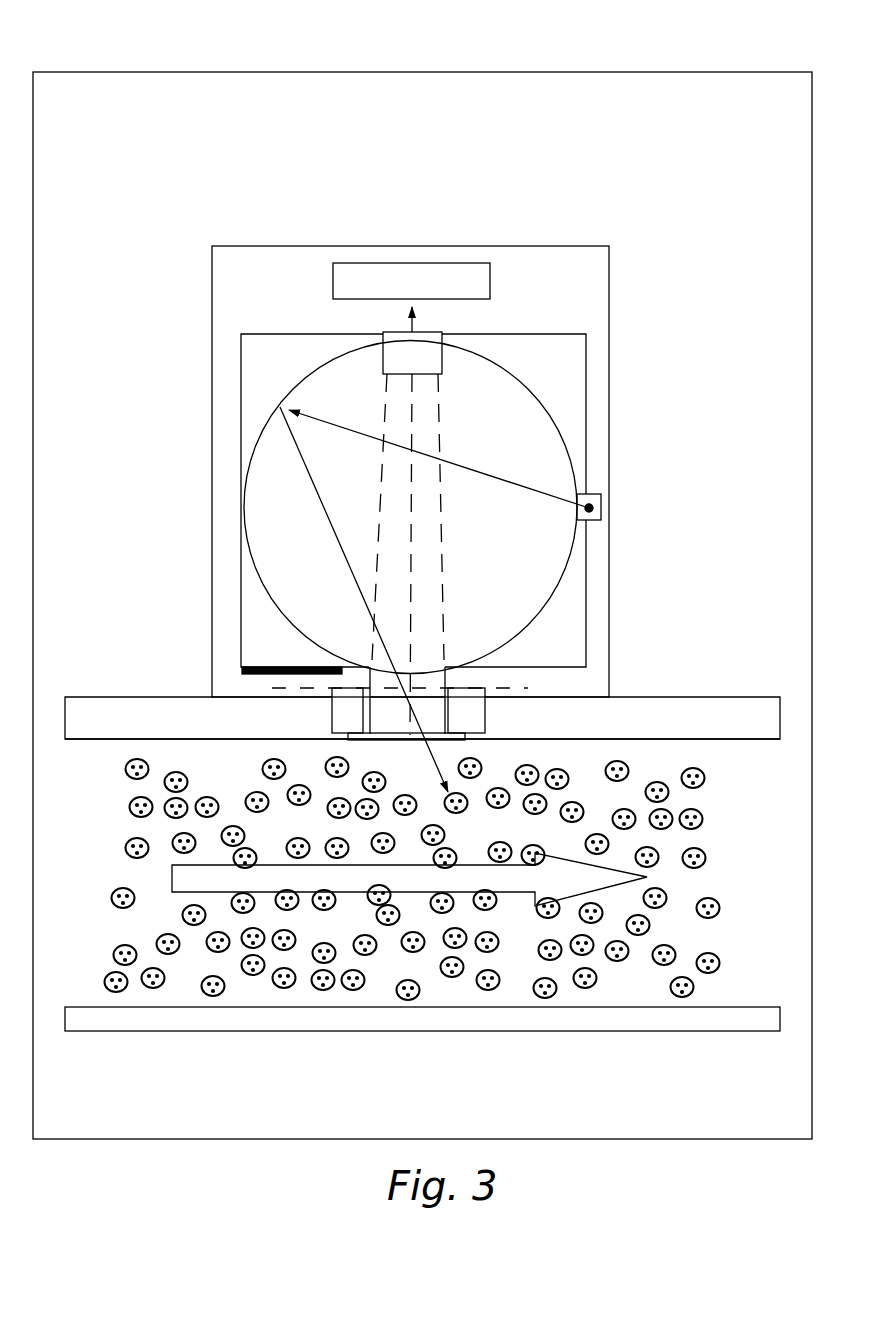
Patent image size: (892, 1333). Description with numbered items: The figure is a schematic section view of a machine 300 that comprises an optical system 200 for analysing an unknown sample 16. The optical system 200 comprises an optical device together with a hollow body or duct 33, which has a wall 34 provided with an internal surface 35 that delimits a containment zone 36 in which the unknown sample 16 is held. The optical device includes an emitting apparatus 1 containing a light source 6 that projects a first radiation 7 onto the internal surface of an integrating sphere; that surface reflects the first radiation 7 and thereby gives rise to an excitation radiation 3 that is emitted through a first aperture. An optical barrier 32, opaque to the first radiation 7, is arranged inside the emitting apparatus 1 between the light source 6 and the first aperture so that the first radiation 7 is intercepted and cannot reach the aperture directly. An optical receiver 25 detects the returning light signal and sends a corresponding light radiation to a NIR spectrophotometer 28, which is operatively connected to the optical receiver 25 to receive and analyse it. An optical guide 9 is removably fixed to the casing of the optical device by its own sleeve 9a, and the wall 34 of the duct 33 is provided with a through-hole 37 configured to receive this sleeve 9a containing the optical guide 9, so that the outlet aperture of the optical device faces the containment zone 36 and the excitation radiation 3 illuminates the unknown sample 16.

The machine 300 is at (170, 62).
The optical system 200 is at (158, 275).
The emitting apparatus 1 is at (571, 290).
The NIR spectrophotometer 28 is at (333, 278).
The optical receiver 25 is at (390, 352).
The optical barrier 32 is at (558, 577).
The light source 6 is at (589, 508).
The first radiation 7 is at (492, 476).
The excitation radiation 3 is at (317, 490).
The optical guide 9 is at (452, 717).
The sleeve 9a is at (347, 705).
The through-hole 37 is at (478, 715).
The wall 34 is at (95, 712).
The internal surface 35 is at (297, 740).
The hollow body 33 is at (628, 1026).
The containment zone 36 is at (535, 851).
The unknown sample 16 is at (430, 952).